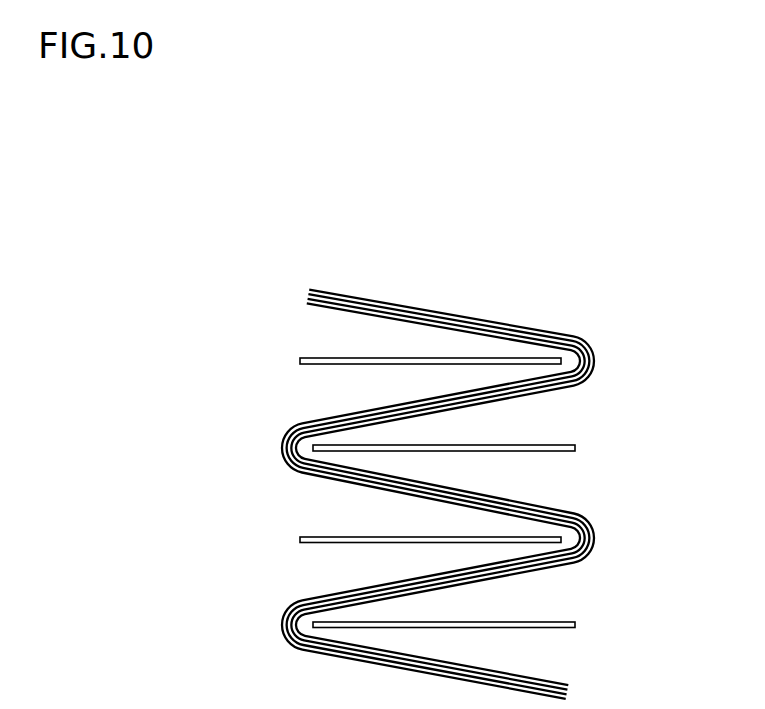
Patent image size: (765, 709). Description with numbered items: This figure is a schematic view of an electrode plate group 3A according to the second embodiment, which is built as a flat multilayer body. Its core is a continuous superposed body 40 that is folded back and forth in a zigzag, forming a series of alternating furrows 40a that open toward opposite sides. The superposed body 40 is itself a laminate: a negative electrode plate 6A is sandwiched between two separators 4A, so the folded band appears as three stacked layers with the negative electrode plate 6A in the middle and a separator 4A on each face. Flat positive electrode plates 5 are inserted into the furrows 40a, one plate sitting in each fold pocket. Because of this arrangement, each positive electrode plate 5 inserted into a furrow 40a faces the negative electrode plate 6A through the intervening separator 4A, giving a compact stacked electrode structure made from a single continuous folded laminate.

The electrode plate group 3A is at (617, 198).
The superposed body 40 is at (548, 222).
The separator 4A is at (428, 307).
The negative electrode plate 6A is at (479, 317).
The furrow 40a is at (316, 329).
The positive electrode plate 5 is at (312, 366).